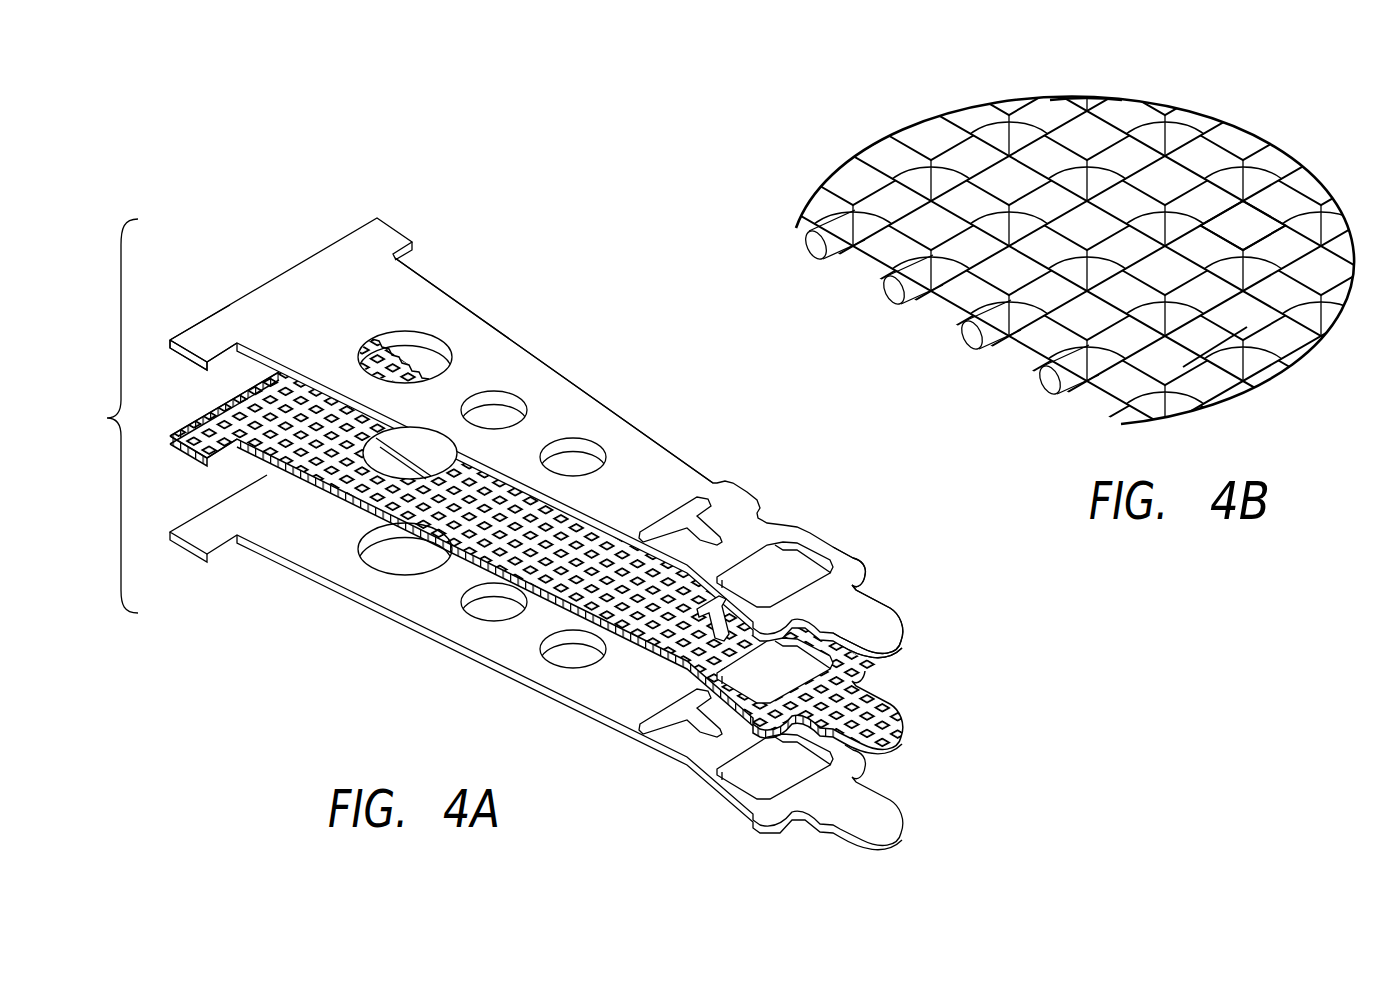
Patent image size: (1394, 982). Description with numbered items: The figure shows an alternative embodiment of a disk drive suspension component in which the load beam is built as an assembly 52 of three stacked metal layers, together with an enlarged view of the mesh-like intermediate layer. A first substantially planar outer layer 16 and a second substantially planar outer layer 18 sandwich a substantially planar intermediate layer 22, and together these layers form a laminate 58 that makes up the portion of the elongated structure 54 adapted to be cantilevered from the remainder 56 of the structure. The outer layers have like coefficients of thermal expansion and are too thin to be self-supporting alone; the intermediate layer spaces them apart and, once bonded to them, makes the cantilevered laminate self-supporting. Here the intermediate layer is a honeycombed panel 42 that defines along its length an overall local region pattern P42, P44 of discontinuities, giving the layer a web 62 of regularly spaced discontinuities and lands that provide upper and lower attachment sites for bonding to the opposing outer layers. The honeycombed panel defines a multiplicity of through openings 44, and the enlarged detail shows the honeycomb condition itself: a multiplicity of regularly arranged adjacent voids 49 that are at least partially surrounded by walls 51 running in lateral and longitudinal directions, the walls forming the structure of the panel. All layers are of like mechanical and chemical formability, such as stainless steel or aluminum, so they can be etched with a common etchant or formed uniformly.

In FIG. 4A, the first outer layer 16 is at (356, 234).
In FIG. 4A, the second outer layer 18 is at (180, 548).
In FIG. 4A, the intermediate layer 22 is at (198, 403).
In FIG. 4A, the honeycombed panel 42 is at (273, 403).
In FIG. 4B, the honeycombed panel 42 is at (924, 80).
In FIG. 4B, the through openings 44 is at (1182, 367).
In FIG. 4B, the voids 49 is at (1245, 227).
In FIG. 4B, the walls 51 is at (1117, 390).
In FIG. 4A, the assembly 52 is at (503, 293).
In FIG. 4A, the elongated structure 54 is at (652, 422).
In FIG. 4A, the remainder of the structure 56 is at (193, 321).
In FIG. 4A, the laminate 58 is at (103, 416).
In FIG. 4A, the web 62 is at (887, 687).
In FIG. 4A, the local region pattern P42 is at (312, 442).
In FIG. 4B, the local region pattern P42 is at (1104, 100).
In FIG. 4A, the local region pattern P44 is at (368, 494).